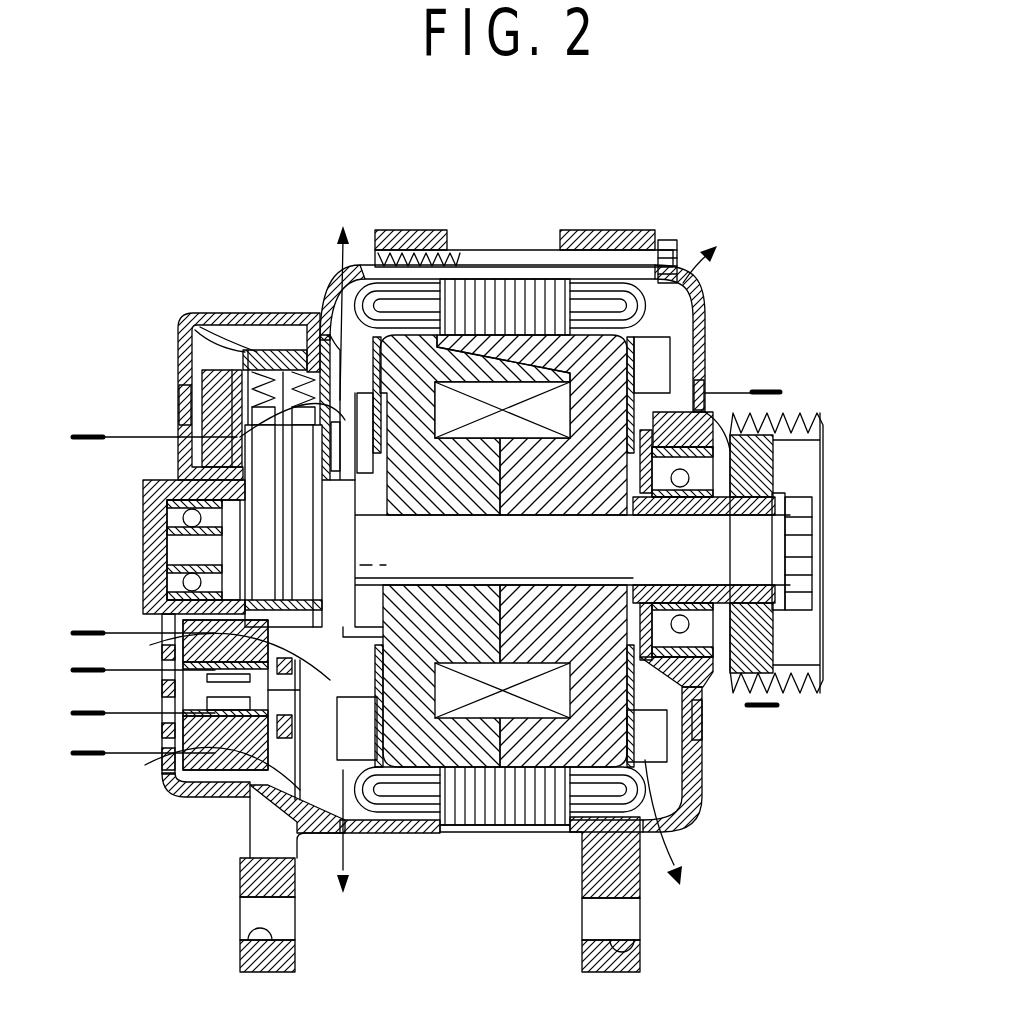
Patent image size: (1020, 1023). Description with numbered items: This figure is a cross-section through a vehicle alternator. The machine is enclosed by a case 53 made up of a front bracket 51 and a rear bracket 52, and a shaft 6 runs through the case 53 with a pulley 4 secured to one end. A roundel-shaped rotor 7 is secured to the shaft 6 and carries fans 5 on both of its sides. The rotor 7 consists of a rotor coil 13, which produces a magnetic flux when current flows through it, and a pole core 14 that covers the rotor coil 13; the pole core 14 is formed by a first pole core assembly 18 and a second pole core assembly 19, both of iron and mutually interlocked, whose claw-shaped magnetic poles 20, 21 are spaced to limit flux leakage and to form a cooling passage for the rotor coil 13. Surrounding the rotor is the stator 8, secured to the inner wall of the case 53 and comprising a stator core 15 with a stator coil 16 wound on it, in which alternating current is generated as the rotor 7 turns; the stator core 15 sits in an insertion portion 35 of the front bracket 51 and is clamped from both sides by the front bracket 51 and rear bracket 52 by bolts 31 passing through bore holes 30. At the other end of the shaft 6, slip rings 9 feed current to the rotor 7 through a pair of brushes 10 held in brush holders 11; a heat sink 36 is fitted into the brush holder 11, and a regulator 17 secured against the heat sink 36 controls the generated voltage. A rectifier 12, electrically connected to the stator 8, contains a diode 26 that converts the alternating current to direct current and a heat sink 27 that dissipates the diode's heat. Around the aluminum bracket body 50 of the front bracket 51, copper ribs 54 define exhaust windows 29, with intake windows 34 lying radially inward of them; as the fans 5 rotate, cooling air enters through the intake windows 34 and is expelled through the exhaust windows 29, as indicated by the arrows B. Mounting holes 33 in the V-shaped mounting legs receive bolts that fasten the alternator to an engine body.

The pulley 4 is at (820, 412).
The fans 5 is at (707, 348).
The shaft 6 is at (740, 535).
The rotor 7 is at (737, 627).
The stator 8 is at (535, 280).
The slip rings 9 is at (240, 545).
The brushes 10 is at (262, 420).
The brush holders 11 is at (282, 415).
The rectifier 12 is at (165, 770).
The rotor coil 13 is at (620, 900).
The pole core 14 is at (712, 756).
The stator core 15 is at (515, 330).
The stator coil 16 is at (620, 285).
The regulator 17 is at (190, 314).
The first pole core assembly 18 is at (400, 780).
The second pole core assembly 19 is at (515, 770).
The claw-shaped magnetic poles 20 is at (467, 360).
The claw-shaped magnetic poles 21 is at (505, 340).
The diode 26 is at (225, 678).
The heat sink 27 is at (210, 643).
The exhaust windows 29 is at (378, 337).
The bore holes 30 is at (603, 257).
The bolts 31 is at (683, 263).
The mounting holes 33 is at (640, 933).
The intake windows 34 is at (180, 380).
The insertion portion 35 is at (550, 833).
The heat sink 36 is at (305, 430).
The bracket body 50 is at (708, 352).
The front bracket 51 is at (688, 777).
The rear bracket 52 is at (190, 797).
The case 53 is at (705, 773).
The ribs 54 is at (340, 240).
The arrows B is at (133, 440).